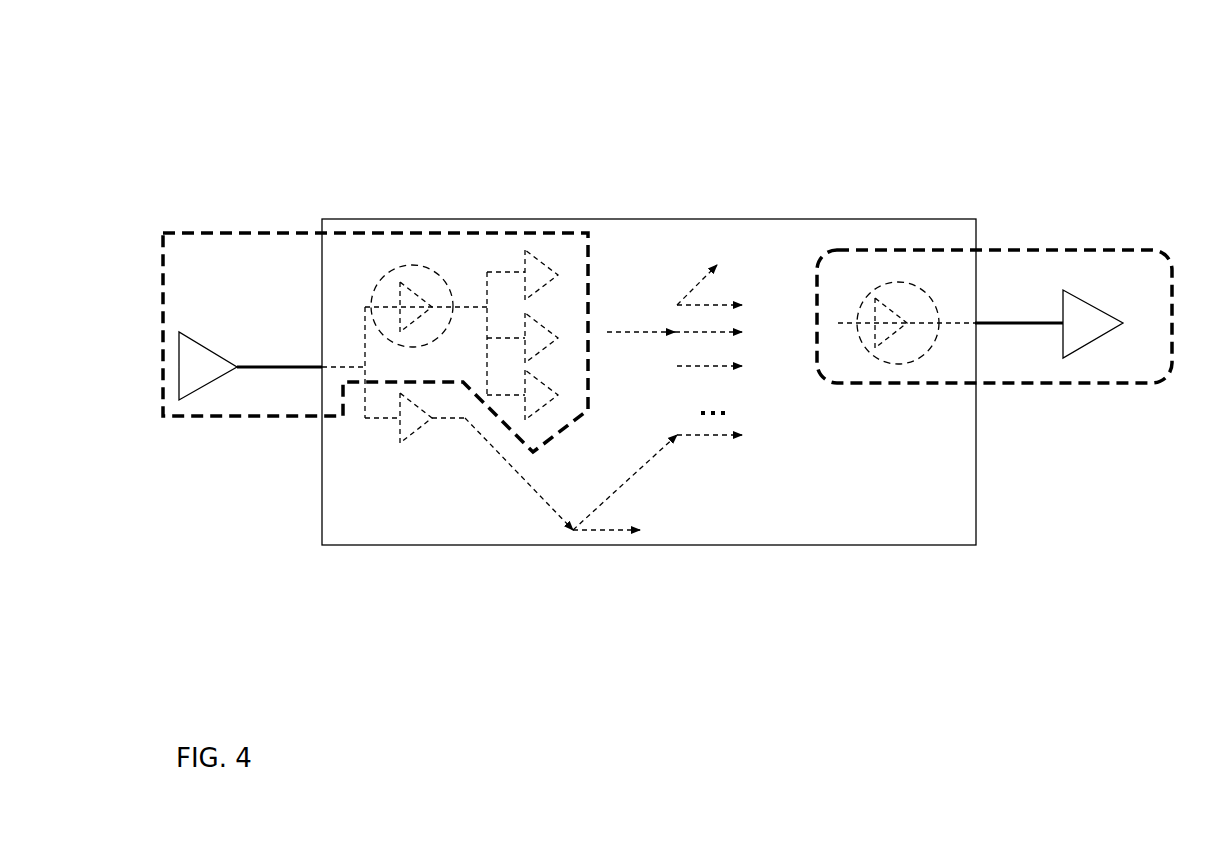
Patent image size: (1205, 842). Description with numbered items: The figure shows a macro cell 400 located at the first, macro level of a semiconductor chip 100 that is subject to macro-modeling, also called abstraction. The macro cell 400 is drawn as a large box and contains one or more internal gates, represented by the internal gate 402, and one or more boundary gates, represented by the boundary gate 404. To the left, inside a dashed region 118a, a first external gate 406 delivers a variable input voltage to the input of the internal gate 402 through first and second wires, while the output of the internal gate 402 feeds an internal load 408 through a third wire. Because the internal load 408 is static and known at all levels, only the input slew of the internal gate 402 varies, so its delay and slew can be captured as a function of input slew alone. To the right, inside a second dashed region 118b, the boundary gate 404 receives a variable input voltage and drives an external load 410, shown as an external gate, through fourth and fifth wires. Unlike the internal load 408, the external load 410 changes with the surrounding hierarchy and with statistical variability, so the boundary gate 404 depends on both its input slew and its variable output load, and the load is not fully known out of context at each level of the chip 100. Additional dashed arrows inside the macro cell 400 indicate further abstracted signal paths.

The semiconductor chip 100 is at (483, 125).
The macro cell 400 is at (705, 217).
The internal gate 402 is at (387, 275).
The boundary gate 404 is at (900, 278).
The first external gate 406 is at (210, 348).
The internal load 408 is at (515, 260).
The external load 410 is at (1090, 322).
The first module 118a is at (215, 233).
The second module 118b is at (1095, 248).